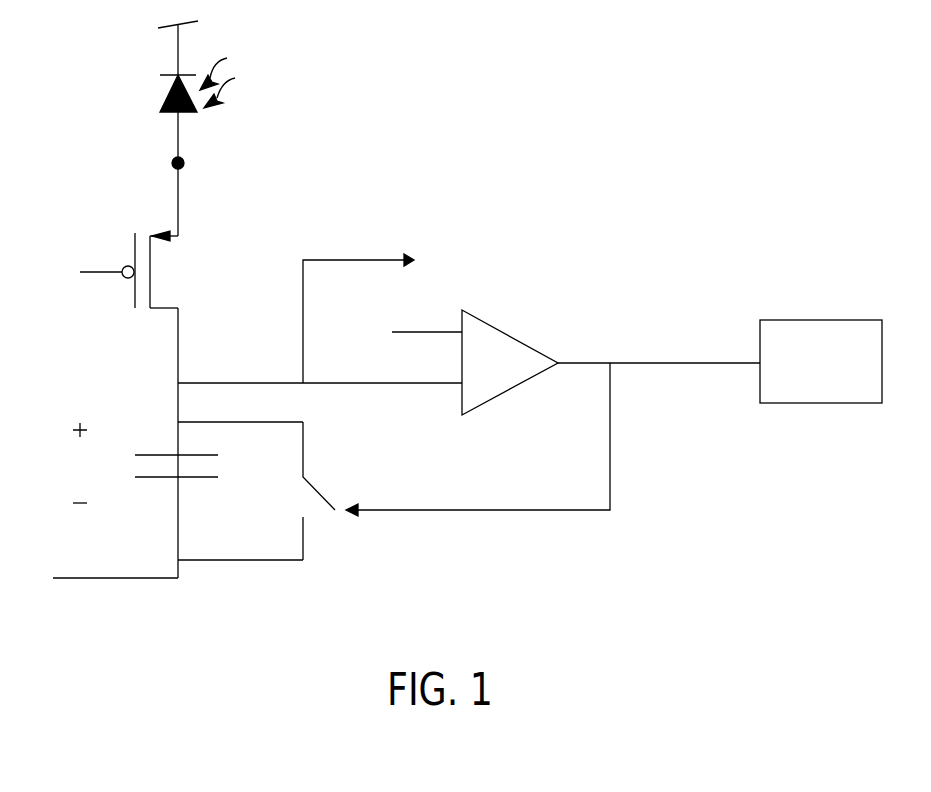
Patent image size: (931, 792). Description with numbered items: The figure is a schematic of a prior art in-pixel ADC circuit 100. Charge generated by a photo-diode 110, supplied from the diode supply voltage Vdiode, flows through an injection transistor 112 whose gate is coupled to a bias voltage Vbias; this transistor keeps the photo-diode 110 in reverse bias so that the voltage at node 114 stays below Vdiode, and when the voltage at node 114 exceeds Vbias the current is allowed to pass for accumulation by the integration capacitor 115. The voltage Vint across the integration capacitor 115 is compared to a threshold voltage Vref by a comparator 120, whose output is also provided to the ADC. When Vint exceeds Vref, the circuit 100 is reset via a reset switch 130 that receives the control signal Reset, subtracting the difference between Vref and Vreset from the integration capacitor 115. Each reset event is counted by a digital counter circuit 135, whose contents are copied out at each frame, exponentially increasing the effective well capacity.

The in-pixel ADC circuit 100 is at (534, 96).
The photo-diode 110 is at (170, 97).
The injection transistor 112 is at (135, 246).
The node 114 is at (184, 163).
The integration capacitor 115 is at (147, 452).
The comparator 120 is at (510, 333).
The reset switch 130 is at (305, 519).
The digital counter circuit 135 is at (820, 320).